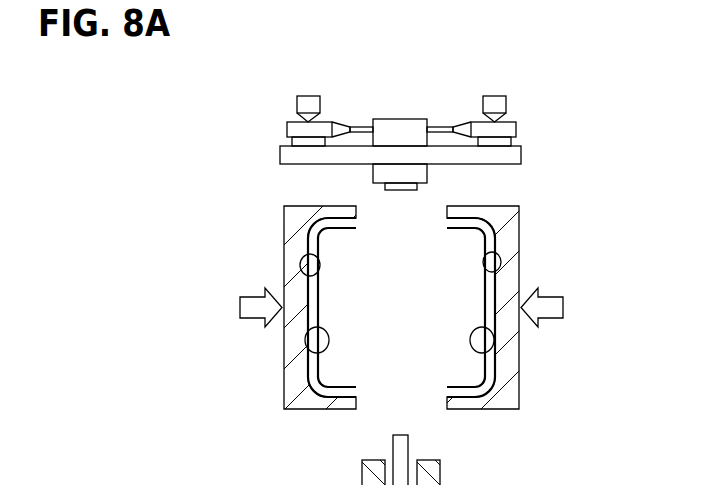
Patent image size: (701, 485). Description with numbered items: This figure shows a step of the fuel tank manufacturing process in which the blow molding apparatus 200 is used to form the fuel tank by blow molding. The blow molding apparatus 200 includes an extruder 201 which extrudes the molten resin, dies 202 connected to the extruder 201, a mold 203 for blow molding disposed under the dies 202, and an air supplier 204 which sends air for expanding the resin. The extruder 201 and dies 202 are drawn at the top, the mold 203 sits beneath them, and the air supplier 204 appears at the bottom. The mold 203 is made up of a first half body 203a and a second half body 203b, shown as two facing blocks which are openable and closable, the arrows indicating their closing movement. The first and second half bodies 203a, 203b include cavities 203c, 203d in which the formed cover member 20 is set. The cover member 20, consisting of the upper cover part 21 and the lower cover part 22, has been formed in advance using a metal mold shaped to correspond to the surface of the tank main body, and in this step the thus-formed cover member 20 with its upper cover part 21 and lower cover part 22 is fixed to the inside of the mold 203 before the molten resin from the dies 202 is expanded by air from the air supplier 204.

The blow molding apparatus 200 is at (441, 127).
The extruder 201 is at (400, 122).
The dies 202 is at (428, 172).
The mold for blow molding 203 is at (433, 316).
The first half body 203a is at (363, 316).
The second half body 203b is at (540, 327).
The cavity 203c is at (302, 260).
The cavity 203d is at (500, 258).
The air supplier 204 is at (440, 463).
The cover member 20 is at (401, 307).
The upper cover part 21 is at (326, 350).
The lower cover part 22 is at (484, 352).